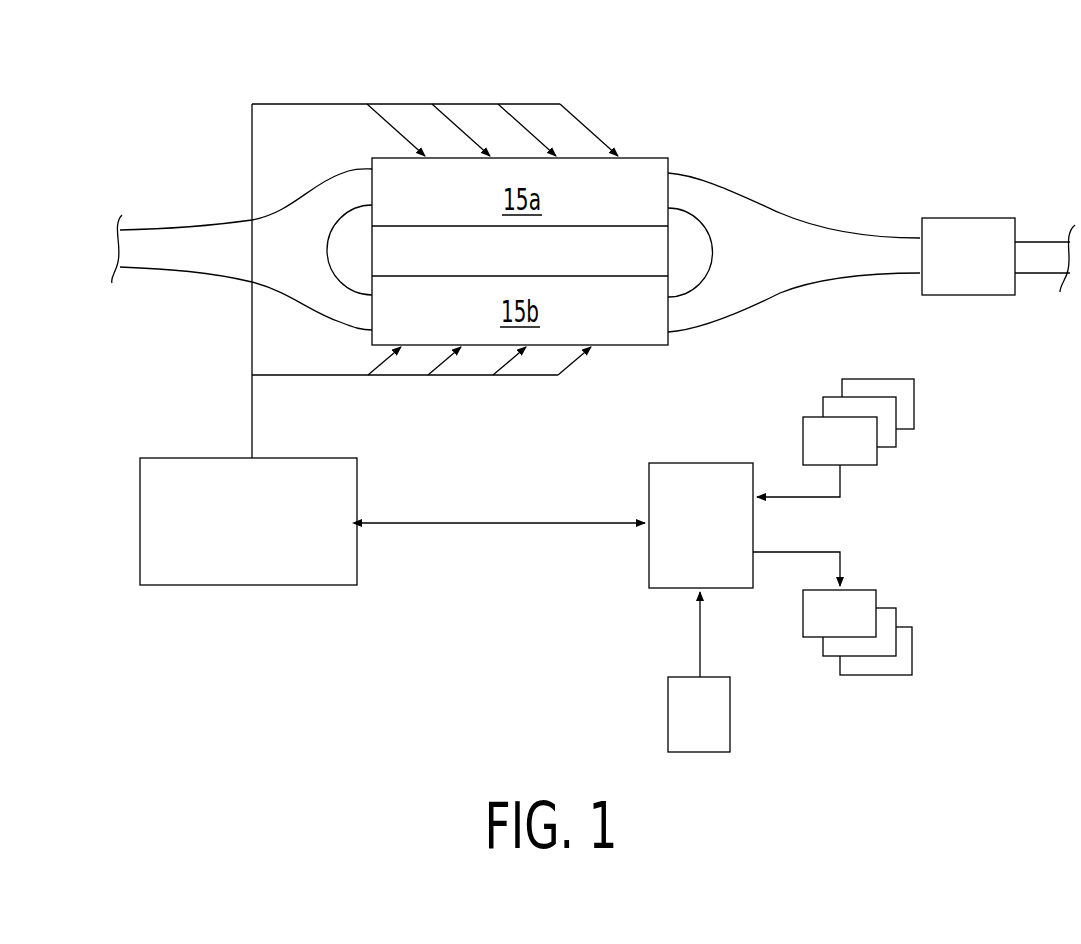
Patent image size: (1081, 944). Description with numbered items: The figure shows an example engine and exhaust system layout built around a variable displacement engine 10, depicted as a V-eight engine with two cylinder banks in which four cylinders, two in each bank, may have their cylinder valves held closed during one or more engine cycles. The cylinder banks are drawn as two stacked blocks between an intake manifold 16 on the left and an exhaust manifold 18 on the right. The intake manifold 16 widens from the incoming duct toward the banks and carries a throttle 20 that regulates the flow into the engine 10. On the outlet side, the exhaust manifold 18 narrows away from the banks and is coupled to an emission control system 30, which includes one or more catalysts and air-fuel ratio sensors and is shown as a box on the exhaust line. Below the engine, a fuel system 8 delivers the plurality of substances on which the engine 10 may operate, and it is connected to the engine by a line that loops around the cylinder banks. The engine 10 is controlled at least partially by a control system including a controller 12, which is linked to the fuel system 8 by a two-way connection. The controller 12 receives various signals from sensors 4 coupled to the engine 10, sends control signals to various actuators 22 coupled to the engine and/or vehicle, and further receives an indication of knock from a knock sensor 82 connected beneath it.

The variable displacement engine 10 is at (672, 120).
The intake manifold 16 is at (233, 220).
The throttle 20 is at (204, 244).
The exhaust manifold 18 is at (745, 222).
The emission control system 30 is at (968, 217).
The sensors 4 is at (914, 400).
The actuators 22 is at (912, 648).
The controller 12 is at (670, 590).
The fuel system 8 is at (248, 588).
The knock sensor 82 is at (730, 717).